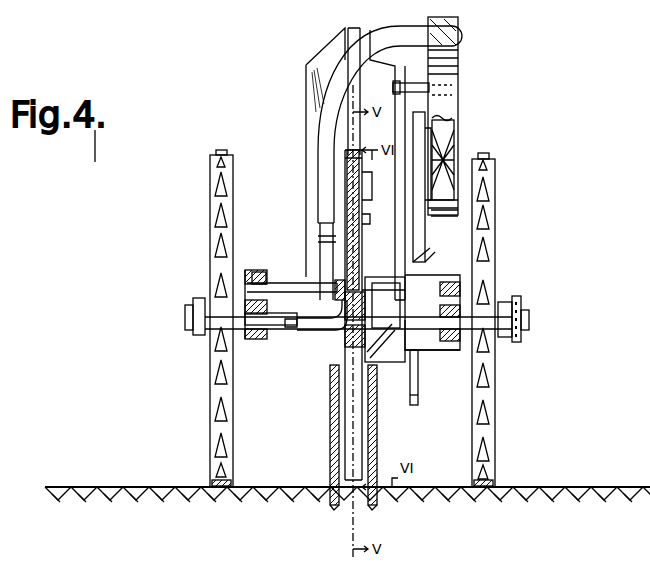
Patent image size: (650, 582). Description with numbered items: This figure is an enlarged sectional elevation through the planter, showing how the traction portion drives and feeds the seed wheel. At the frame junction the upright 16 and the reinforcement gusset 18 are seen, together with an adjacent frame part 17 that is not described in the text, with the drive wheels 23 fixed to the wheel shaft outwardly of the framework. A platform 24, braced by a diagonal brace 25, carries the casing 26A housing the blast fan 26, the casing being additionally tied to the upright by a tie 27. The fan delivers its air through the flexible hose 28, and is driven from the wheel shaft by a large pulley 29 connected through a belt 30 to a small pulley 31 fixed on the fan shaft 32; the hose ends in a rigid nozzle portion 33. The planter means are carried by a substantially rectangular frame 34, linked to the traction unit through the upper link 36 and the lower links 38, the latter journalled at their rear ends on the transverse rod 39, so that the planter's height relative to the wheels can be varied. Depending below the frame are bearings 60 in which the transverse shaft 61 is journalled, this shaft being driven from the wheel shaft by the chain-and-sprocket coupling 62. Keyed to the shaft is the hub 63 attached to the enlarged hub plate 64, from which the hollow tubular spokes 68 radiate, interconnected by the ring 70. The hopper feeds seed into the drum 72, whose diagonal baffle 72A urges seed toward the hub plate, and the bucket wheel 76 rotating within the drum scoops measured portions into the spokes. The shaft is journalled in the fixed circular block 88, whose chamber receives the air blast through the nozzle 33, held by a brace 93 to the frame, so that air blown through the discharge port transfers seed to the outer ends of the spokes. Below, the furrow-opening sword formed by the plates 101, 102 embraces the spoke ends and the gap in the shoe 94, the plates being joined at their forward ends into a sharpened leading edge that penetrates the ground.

The upright 16 is at (316, 88).
The pipe 17 is at (350, 30).
The reinforcement gusset 18 is at (320, 255).
The drive wheel 23 is at (210, 195).
The platform 24 is at (445, 216).
The diagonal brace 25 is at (425, 255).
The blast fan 26 is at (455, 142).
The casing 26A is at (458, 103).
The tie 27 is at (416, 85).
The flexible hose 28 is at (413, 28).
The large pulley 29 is at (418, 395).
The belt 30 is at (417, 172).
The small pulley 31 is at (413, 120).
The fan shaft 32 is at (452, 126).
The rigid nozzle portion 33 is at (318, 238).
The frame 34 is at (432, 282).
The upper link 36 is at (368, 200).
The lower link 38 is at (198, 300).
The transverse rod 39 is at (316, 330).
The bearing 60 is at (253, 339).
The transverse shaft 61 is at (293, 330).
The chain-and-sprocket coupling 62 is at (525, 308).
The hub 63 is at (365, 305).
The hub plate 64 is at (360, 258).
The spoke 68 is at (362, 222).
The ring 70 is at (342, 280).
The drum 72 is at (388, 362).
The baffle 72A is at (387, 341).
The bucket wheel 76 is at (386, 305).
The circular block 88 is at (345, 338).
The brace 93 is at (272, 290).
The shoe 94 is at (362, 160).
The plate-like element 101 is at (377, 429).
The plate-like element 102 is at (330, 429).